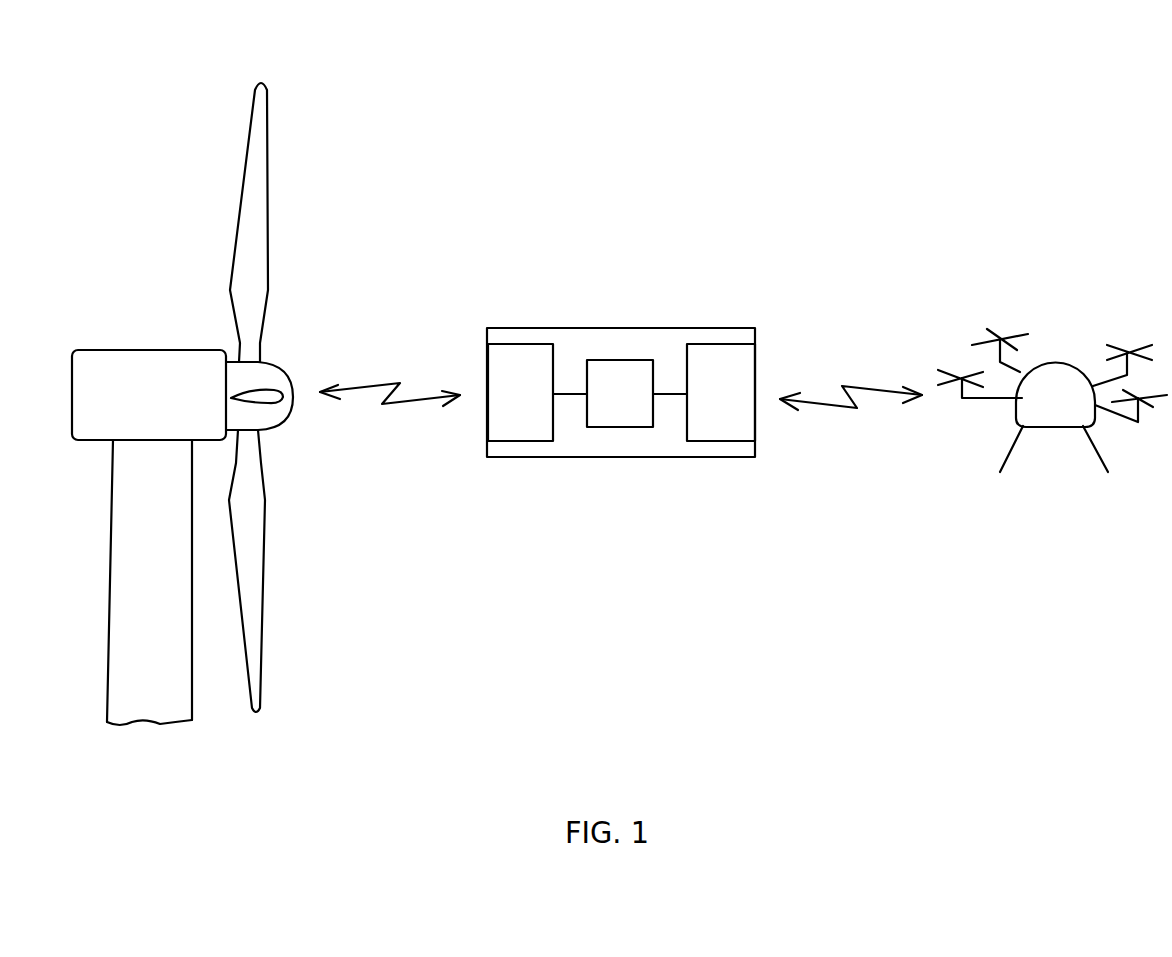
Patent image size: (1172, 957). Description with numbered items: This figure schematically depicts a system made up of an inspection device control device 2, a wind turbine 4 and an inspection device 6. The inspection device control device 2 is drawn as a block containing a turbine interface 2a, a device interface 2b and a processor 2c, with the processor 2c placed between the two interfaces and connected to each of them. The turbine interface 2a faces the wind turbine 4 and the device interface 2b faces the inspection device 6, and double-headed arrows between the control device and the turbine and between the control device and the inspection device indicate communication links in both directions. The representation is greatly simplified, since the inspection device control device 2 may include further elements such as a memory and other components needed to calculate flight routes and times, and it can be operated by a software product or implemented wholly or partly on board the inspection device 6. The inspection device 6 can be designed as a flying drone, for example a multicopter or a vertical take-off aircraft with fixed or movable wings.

The inspection device control device 2 is at (621, 368).
The turbine interface 2a is at (506, 406).
The device interface 2b is at (707, 406).
The processor 2c is at (606, 406).
The wind turbine 4 is at (140, 357).
The inspection device 6 is at (1055, 370).